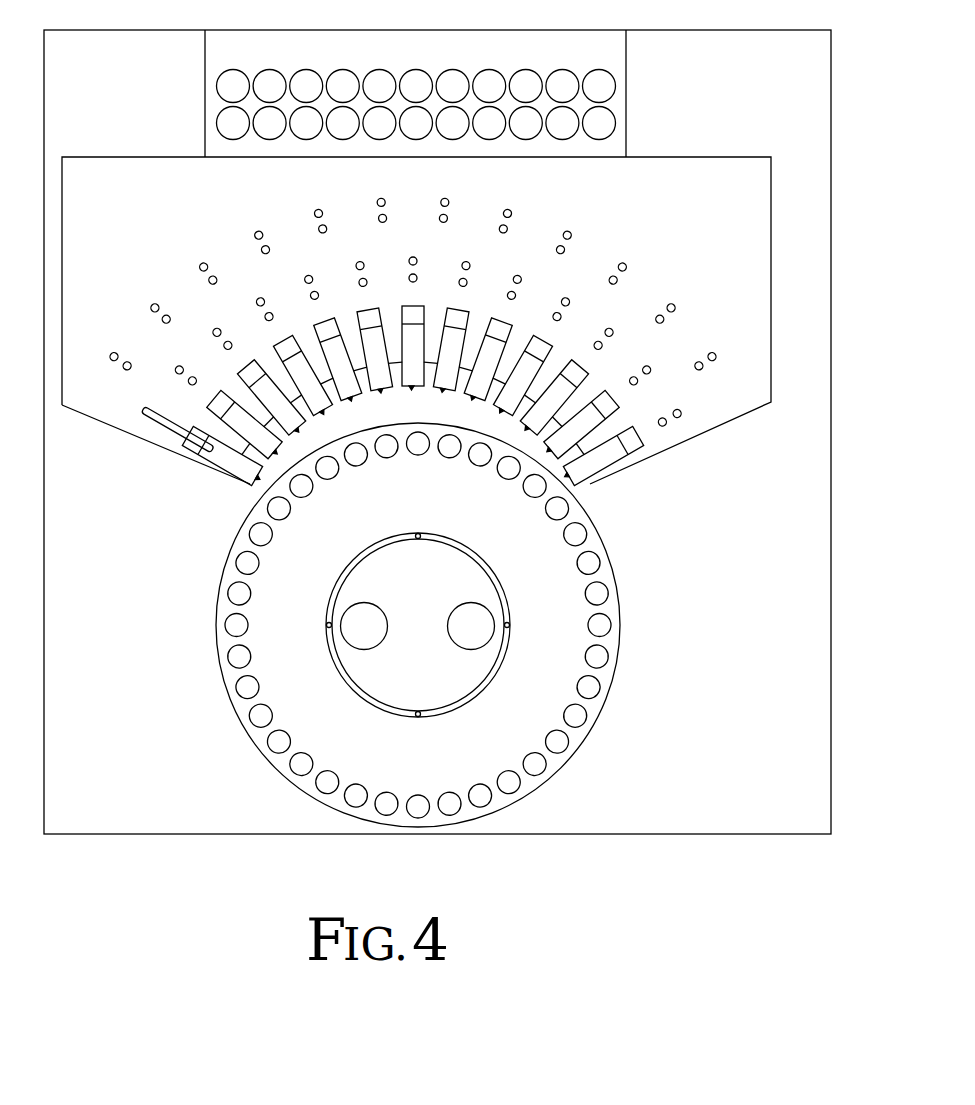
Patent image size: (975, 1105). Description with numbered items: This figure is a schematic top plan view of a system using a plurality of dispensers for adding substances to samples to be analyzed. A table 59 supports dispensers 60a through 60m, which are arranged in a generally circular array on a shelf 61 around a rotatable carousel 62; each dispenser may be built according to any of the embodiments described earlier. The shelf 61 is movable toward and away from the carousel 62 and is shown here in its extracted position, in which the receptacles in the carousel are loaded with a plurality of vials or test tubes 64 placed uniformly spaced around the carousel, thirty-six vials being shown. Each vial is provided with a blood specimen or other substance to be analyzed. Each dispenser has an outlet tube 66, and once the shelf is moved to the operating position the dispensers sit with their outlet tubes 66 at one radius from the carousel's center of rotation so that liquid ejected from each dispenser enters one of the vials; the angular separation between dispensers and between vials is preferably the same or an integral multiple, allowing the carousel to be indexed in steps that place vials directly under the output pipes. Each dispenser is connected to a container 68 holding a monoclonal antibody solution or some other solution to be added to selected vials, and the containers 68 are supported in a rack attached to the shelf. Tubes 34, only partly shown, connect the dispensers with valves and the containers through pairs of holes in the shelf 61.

The tube 34 is at (165, 437).
The table 59 is at (830, 500).
The dispenser 60a is at (240, 475).
The dispenser 60m is at (623, 463).
The shelf 61 is at (747, 414).
The rotatable carousel 62 is at (217, 646).
The vials or test tubes 64 is at (608, 652).
The outlet tube 66 is at (383, 391).
The container 68 is at (613, 117).